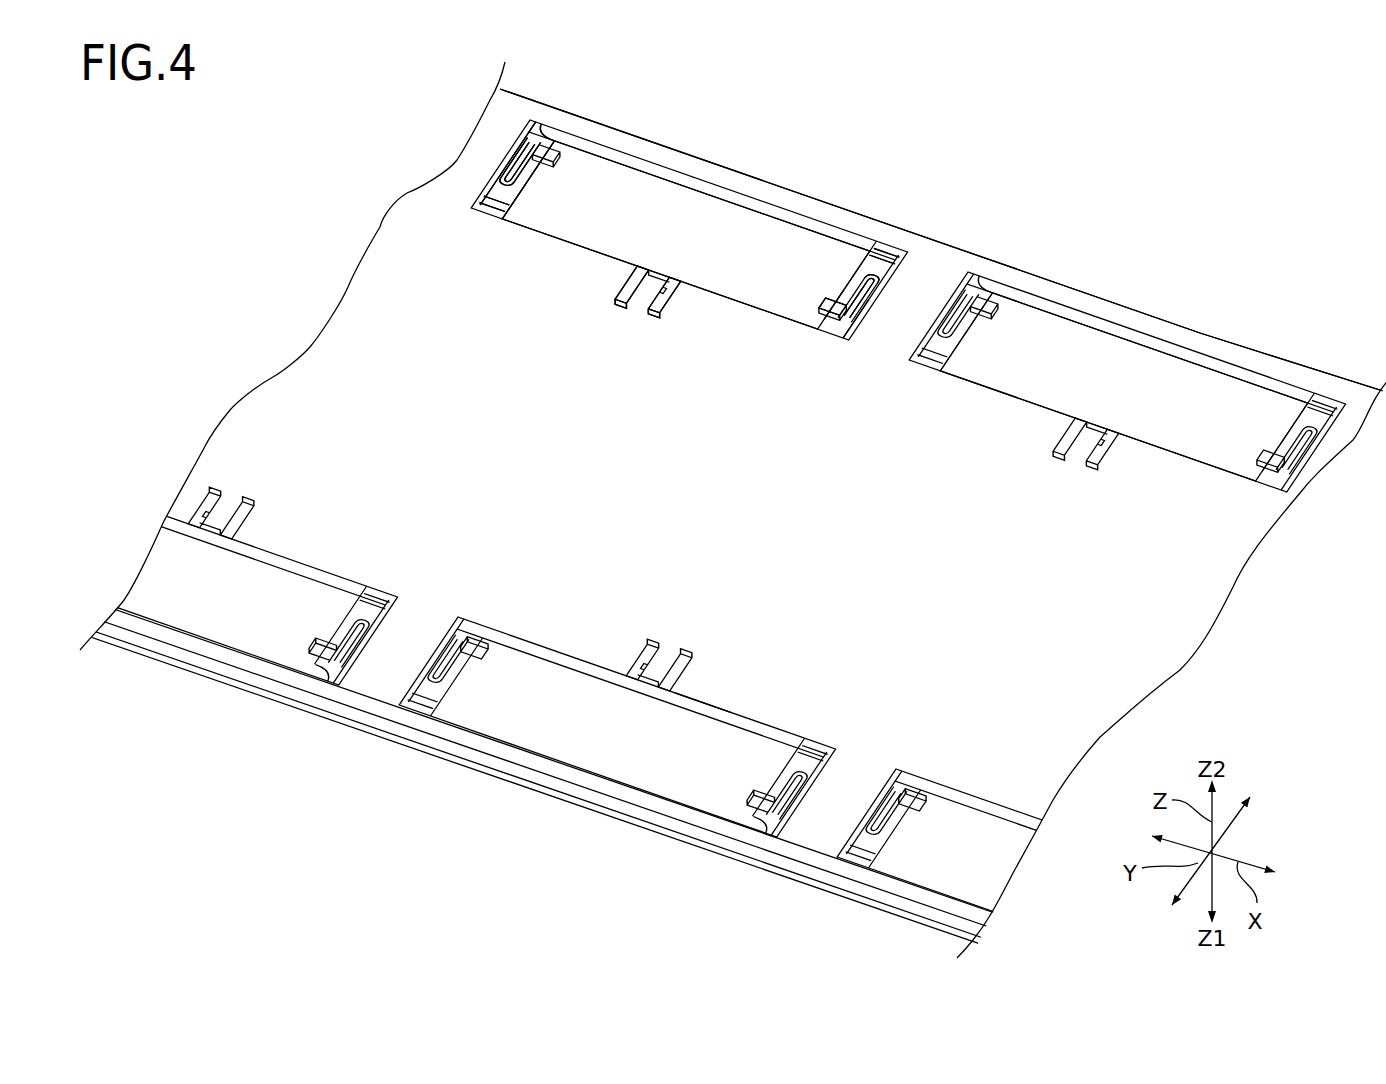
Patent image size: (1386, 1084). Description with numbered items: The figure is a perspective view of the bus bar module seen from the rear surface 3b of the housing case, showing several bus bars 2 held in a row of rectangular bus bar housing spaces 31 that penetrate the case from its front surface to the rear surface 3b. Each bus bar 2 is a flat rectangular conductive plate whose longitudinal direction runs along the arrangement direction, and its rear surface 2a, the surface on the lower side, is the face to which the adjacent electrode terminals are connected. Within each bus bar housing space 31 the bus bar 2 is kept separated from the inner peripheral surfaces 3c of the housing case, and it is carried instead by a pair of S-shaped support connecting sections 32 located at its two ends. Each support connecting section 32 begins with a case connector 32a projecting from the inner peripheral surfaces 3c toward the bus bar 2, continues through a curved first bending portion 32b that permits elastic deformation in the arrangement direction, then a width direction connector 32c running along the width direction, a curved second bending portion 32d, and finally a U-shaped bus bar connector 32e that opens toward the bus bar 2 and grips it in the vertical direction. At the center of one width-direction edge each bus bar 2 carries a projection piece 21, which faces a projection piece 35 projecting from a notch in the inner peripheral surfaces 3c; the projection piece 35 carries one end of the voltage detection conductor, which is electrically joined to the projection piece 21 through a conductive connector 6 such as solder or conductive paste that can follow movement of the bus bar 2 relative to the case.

The bus bar 2 is at (606, 220).
The rear surface 2a is at (668, 200).
The rear surface 3b is at (922, 298).
The inner peripheral surfaces 3c is at (548, 128).
The connector 6 is at (265, 545).
The projection piece 21 is at (675, 300).
The bus bar housing space 31 is at (492, 210).
The support connecting section 32 is at (516, 196).
The case connector 32a is at (888, 272).
The first bending portion 32b is at (868, 255).
The width direction connector 32c is at (858, 282).
The second bending portion 32d is at (856, 332).
The bus bar connector 32e is at (834, 318).
The projection piece 35 is at (637, 300).